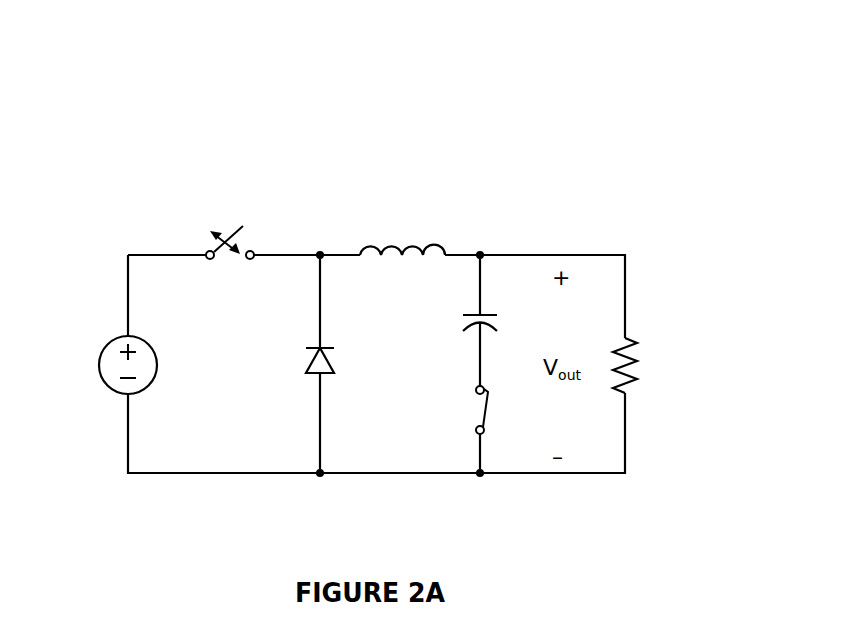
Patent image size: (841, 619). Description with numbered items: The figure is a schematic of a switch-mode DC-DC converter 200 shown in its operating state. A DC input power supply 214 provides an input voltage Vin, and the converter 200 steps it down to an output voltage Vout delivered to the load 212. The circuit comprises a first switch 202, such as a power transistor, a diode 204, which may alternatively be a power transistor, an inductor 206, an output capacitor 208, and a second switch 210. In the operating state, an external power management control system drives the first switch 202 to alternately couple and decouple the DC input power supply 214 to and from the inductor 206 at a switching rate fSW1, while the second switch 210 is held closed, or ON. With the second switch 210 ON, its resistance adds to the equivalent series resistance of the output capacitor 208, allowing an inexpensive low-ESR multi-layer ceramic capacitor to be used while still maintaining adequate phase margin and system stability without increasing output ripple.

The switch-mode DC-DC converter 200 is at (668, 102).
The first switch 202 is at (238, 213).
The diode 204 is at (303, 354).
The inductor 206 is at (403, 232).
The output capacitor 208 is at (456, 322).
The second switch 210 is at (457, 409).
The load 212 is at (640, 391).
The DC input power supply 214 is at (108, 333).